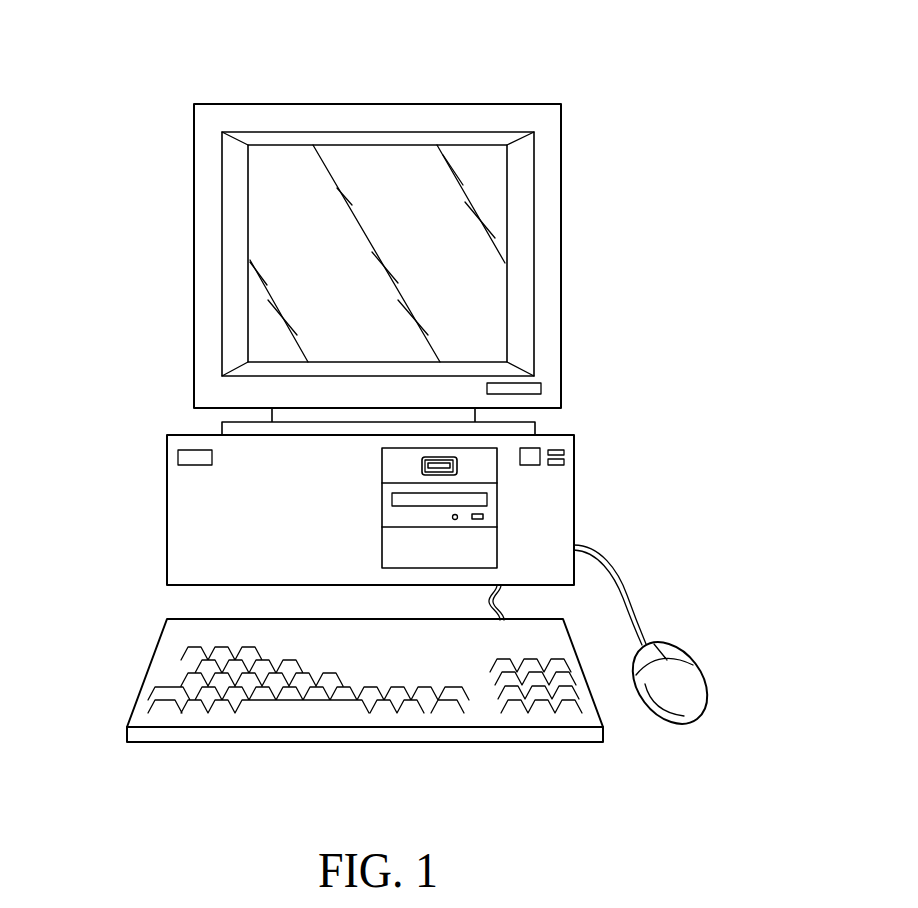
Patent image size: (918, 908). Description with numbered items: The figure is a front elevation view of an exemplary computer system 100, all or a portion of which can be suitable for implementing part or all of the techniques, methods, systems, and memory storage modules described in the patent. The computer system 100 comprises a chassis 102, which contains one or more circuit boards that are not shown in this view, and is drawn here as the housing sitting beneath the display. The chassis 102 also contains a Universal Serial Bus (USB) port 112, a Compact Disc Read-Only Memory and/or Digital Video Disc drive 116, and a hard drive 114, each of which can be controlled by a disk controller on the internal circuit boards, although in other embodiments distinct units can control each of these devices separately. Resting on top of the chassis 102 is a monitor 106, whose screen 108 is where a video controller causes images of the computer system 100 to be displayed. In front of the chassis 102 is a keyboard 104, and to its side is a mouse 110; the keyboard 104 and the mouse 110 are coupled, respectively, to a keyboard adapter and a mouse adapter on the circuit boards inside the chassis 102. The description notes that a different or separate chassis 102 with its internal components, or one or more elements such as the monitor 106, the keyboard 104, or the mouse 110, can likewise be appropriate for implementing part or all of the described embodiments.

The computer system 100 is at (558, 74).
The chassis 102 is at (167, 513).
The keyboard 104 is at (149, 668).
The monitor 106 is at (268, 104).
The screen 108 is at (295, 258).
The mouse 110 is at (690, 672).
The Universal Serial Bus (USB) port 112 is at (458, 463).
The hard drive 114 is at (488, 545).
The CD-ROM and/or DVD drive 116 is at (488, 505).